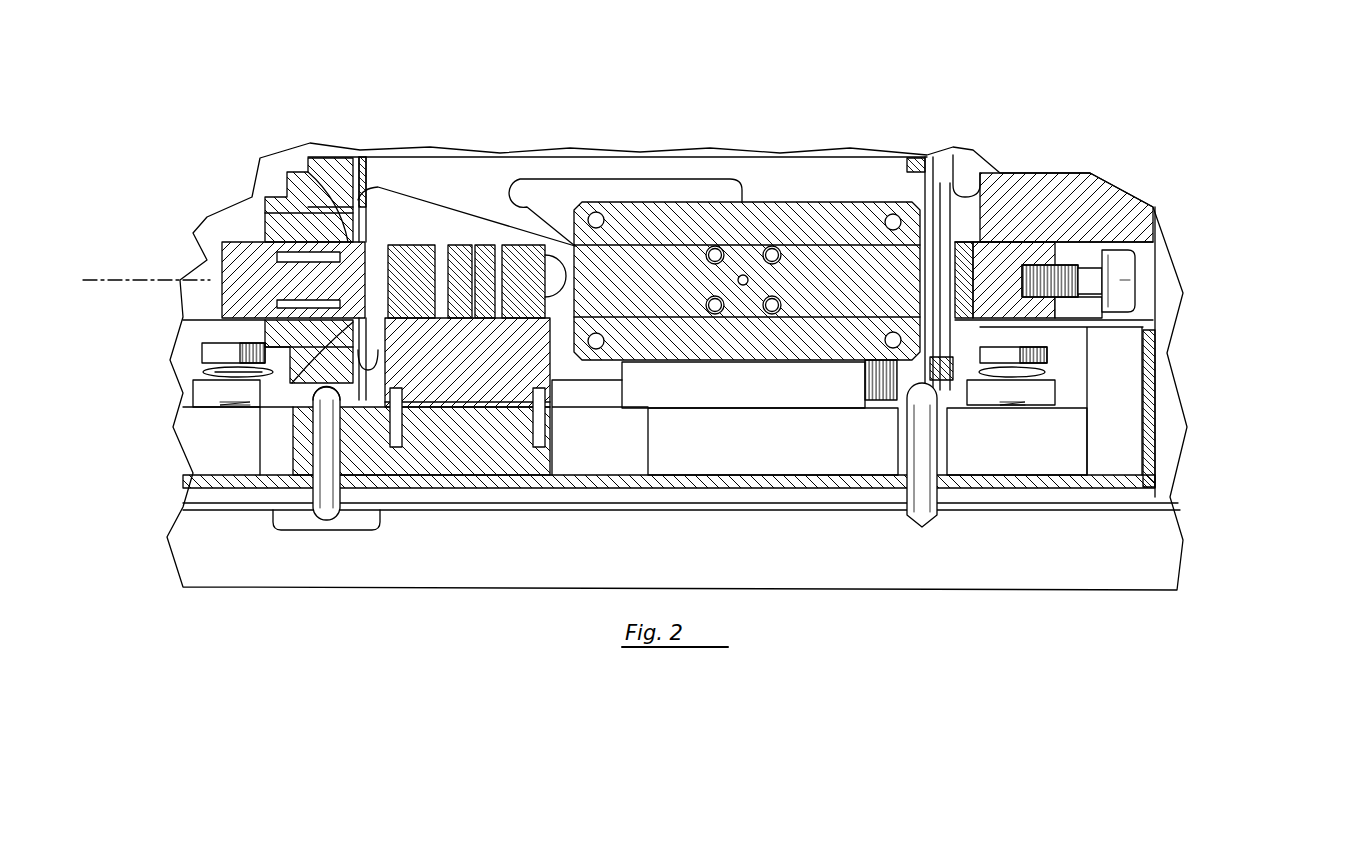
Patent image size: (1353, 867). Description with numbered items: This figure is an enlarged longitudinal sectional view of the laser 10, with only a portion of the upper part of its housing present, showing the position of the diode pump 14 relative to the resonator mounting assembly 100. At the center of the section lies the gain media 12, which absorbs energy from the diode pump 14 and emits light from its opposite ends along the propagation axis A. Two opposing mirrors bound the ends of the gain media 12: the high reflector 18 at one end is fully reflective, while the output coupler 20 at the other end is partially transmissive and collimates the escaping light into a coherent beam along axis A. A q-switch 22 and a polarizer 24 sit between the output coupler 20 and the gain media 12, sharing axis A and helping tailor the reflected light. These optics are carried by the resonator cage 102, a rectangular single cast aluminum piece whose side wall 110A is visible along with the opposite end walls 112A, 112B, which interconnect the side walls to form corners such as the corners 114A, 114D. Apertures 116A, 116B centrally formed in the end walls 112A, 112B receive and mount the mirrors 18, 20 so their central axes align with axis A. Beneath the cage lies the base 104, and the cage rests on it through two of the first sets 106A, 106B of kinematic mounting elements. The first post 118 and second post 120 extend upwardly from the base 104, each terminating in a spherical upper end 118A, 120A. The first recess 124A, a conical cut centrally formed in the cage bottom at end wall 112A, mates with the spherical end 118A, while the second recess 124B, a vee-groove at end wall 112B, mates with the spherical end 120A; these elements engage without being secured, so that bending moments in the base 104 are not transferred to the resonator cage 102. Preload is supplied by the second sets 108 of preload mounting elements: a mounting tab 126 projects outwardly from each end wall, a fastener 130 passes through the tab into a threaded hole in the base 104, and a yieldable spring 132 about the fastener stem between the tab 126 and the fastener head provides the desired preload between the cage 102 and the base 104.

The laser 10 is at (740, 128).
The gain media 12 is at (694, 222).
The diode pump 14 is at (1020, 260).
The high reflector mirror 18 is at (953, 372).
The output coupler mirror 20 is at (255, 278).
The q-switch 22 is at (412, 272).
The polarizer 24 is at (480, 272).
The resonator mounting assembly 100 is at (258, 523).
The resonator cage 102 is at (446, 157).
The base 104 is at (1160, 440).
The first set of kinematic mounting elements 106A is at (305, 448).
The first set of kinematic mounting elements 106B is at (900, 425).
The second set of preload mounting elements 108 is at (172, 358).
The side wall 110A is at (568, 170).
The end wall 112A is at (308, 170).
The end wall 112B is at (930, 165).
The corner 114A is at (340, 157).
The corner 114D is at (952, 185).
The aperture 116A is at (968, 196).
The aperture 116B is at (343, 205).
The first post 118 is at (322, 482).
The spherical upper end of first post 118A is at (330, 395).
The second post 120 is at (922, 485).
The spherical upper end of second post 120A is at (938, 358).
The first recess 124A is at (315, 420).
The second recess 124B is at (897, 402).
The mounting tab 126 is at (215, 388).
The fastener 130 is at (225, 357).
The yieldable spring 132 is at (205, 372).
The propagation axis A is at (148, 280).